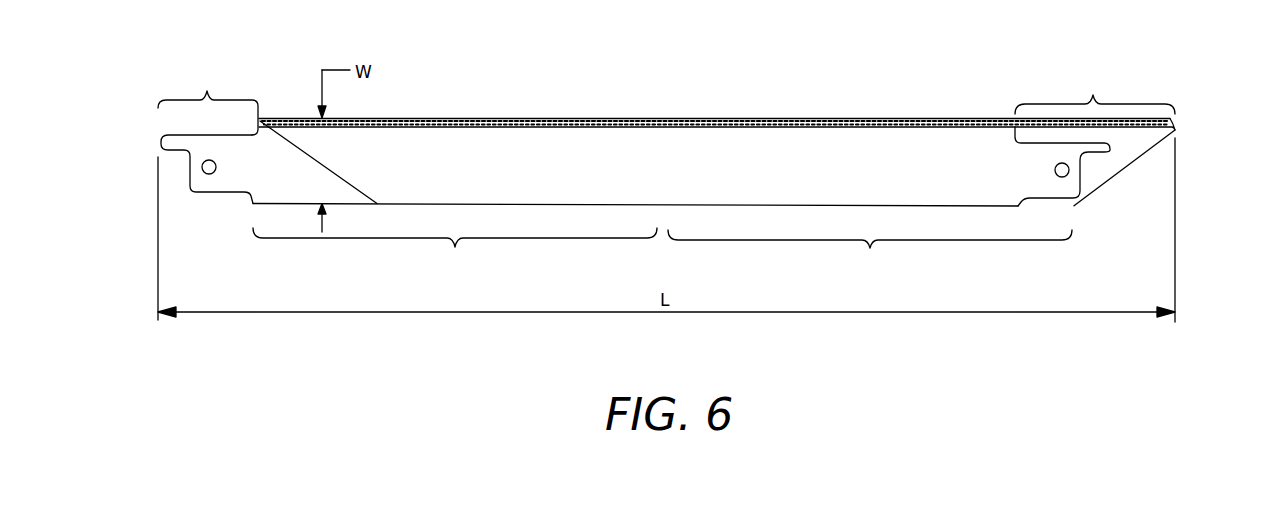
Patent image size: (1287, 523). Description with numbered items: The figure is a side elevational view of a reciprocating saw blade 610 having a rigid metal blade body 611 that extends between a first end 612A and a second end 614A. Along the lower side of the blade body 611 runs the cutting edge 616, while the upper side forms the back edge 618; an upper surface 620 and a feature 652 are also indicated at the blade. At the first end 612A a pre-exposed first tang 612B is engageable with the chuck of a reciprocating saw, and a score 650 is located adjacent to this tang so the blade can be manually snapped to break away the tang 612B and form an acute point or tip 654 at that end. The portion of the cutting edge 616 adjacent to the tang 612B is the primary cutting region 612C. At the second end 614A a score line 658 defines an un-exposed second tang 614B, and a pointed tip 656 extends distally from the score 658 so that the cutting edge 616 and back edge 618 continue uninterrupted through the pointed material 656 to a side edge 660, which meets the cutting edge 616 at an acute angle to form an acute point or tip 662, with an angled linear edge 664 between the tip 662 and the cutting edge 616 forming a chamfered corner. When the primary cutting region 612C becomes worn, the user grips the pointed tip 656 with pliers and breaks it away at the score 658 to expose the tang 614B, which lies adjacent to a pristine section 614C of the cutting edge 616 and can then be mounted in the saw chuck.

The reciprocating saw blade 610 is at (680, 96).
The blade body 611 is at (714, 177).
The first end 612A is at (208, 104).
The first tang 612B is at (190, 150).
The primary cutting region 612C is at (455, 252).
The second end 614A is at (1095, 94).
The second tang 614B is at (1137, 160).
The pristine section of cutting edge 614C is at (870, 254).
The cutting edge 616 is at (717, 102).
The back edge 618 is at (399, 205).
The top surface 620 is at (940, 118).
The score 650 is at (300, 150).
The second curved surface 652 is at (290, 178).
The acute point or tip 654 is at (258, 117).
The pointed tip 656 is at (1127, 154).
The score line 658 is at (1082, 177).
The side edge 660 is at (1090, 201).
The acute point or tip 662 is at (1177, 131).
The angled linear edge 664 is at (1175, 125).